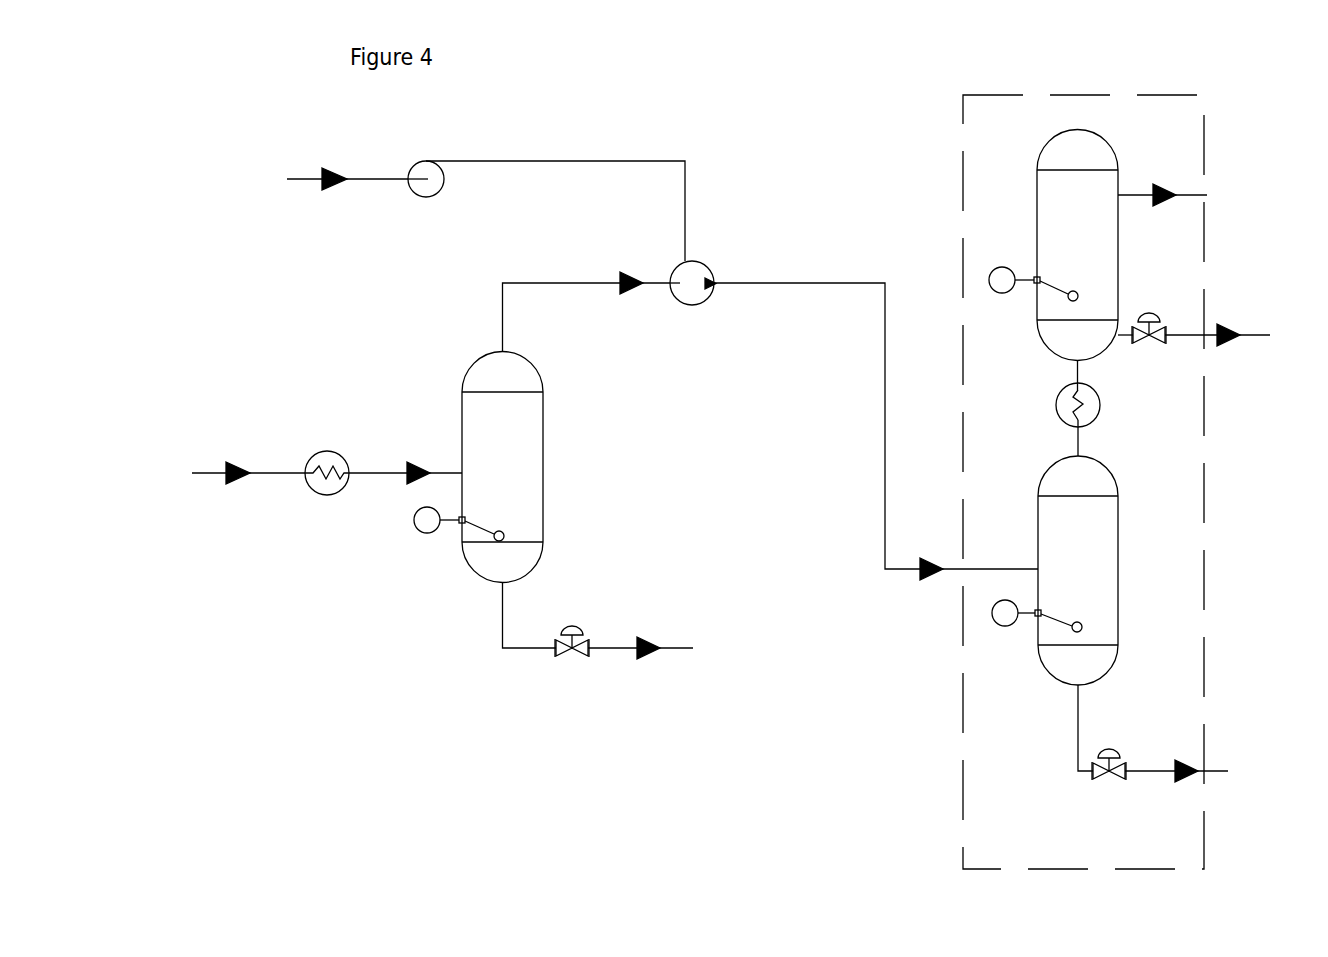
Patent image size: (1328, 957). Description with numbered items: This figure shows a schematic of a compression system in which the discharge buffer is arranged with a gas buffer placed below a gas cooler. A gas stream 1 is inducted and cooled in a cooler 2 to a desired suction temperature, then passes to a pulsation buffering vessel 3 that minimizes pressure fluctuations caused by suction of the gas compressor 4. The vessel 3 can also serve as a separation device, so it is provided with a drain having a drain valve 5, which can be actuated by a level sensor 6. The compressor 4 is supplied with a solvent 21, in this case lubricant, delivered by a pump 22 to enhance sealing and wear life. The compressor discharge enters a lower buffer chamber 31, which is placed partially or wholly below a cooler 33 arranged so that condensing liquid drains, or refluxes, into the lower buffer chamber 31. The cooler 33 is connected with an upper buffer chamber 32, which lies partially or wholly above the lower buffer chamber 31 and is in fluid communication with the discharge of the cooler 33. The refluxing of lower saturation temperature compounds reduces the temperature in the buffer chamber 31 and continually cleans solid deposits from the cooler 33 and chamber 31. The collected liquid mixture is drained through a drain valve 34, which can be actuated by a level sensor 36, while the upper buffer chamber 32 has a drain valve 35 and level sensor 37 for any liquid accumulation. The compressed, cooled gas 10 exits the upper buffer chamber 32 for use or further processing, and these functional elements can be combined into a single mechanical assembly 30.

The gas stream 1 is at (232, 491).
The cooler 2 is at (382, 455).
The pulsation buffering vessel 3 is at (521, 467).
The gas compressor 4 is at (681, 268).
The drain valve 5 is at (598, 643).
The level sensor 6 is at (449, 533).
The compressed, cooled gas 10 is at (1187, 207).
The solvent 21 is at (340, 206).
The pump 22 is at (546, 191).
The single mechanical assembly 30 is at (1135, 482).
The lower buffer chamber 31 is at (1107, 570).
The upper buffer chamber 32 is at (1053, 245).
The cooler 33 is at (1100, 409).
The drain valve 34 is at (1153, 733).
The drain valve 35 is at (1194, 316).
The level sensor 36 is at (1027, 635).
The level sensor 37 is at (1028, 297).